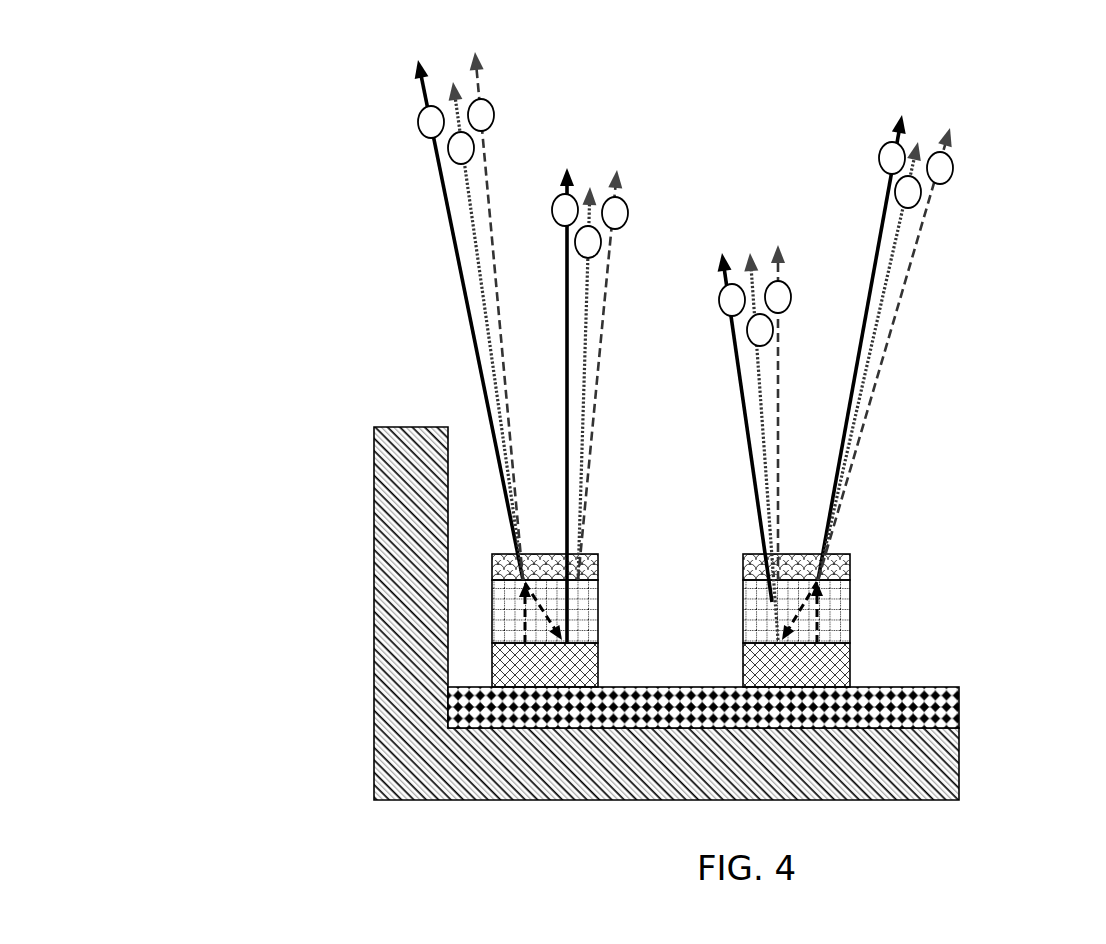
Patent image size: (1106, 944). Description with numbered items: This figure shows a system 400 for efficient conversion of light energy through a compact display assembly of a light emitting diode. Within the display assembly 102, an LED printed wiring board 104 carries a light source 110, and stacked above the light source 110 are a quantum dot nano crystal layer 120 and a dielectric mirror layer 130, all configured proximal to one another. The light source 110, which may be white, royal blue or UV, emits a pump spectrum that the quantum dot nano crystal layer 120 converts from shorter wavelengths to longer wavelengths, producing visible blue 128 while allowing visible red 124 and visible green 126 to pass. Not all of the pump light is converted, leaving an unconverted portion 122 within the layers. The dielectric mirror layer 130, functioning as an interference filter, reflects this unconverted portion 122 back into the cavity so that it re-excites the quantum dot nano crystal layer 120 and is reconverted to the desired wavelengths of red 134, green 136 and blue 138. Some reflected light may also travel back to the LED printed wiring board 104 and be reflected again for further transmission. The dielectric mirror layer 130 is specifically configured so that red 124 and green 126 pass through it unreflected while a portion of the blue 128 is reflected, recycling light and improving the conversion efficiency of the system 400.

The system 400 is at (162, 108).
The display assembly 102 is at (373, 513).
The LED printed wiring board 104 is at (960, 717).
The light source 110 is at (600, 677).
The quantum dot nano crystal layer 120 is at (600, 610).
The unconverted portion of light 122 is at (832, 608).
The visible red 124 is at (408, 87).
The visible green 126 is at (445, 70).
The visible blue 128 is at (465, 43).
The dielectric mirror layer 130 is at (600, 567).
The red 134 is at (568, 155).
The green 136 is at (592, 162).
The blue 138 is at (618, 160).